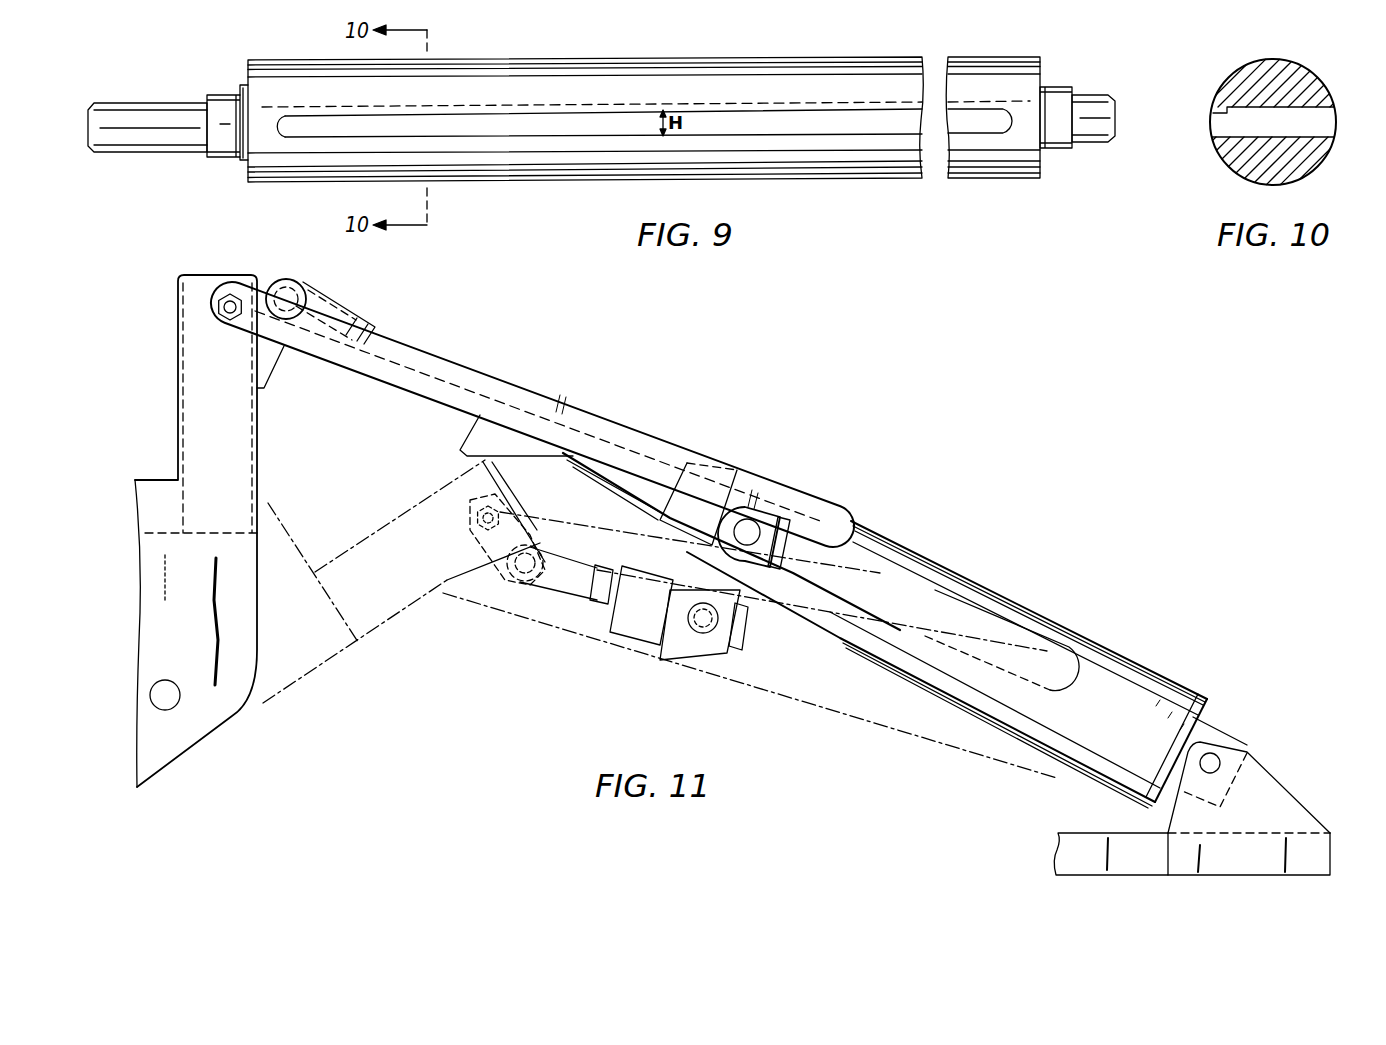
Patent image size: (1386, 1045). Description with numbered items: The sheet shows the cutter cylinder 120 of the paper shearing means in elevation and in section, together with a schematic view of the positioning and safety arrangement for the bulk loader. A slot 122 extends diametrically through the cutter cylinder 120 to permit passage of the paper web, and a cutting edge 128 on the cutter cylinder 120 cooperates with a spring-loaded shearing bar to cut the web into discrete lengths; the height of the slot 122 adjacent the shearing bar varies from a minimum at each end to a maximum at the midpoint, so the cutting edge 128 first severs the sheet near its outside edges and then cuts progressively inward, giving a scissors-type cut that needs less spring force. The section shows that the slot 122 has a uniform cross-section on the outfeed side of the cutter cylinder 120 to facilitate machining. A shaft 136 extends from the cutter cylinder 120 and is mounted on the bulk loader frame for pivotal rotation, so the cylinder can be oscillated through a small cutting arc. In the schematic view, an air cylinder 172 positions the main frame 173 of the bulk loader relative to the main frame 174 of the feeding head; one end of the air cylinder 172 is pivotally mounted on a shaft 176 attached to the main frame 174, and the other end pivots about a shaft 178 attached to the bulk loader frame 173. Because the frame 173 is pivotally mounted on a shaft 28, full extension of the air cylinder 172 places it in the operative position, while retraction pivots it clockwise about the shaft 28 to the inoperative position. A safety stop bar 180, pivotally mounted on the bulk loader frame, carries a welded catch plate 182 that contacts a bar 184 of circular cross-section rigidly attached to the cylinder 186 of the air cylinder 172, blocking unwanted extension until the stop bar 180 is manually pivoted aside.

In FIG. 11, the shaft 28 is at (178, 705).
In FIG. 9, the cutter cylinder 120 is at (806, 180).
In FIG. 10, the cutter cylinder 120 is at (1265, 60).
In FIG. 9, the slot 122 is at (797, 118).
In FIG. 10, the slot 122 is at (1340, 126).
In FIG. 9, the cutting edge 128 is at (597, 117).
In FIG. 10, the cutting edge 128 is at (1214, 106).
In FIG. 9, the shaft 136 is at (130, 153).
In FIG. 11, the air cylinder 172 is at (967, 657).
In FIG. 11, the main frame of the bulk loader 173 is at (190, 757).
In FIG. 11, the main frame of feeding head 174 is at (1092, 833).
In FIG. 11, the shaft 176 is at (1221, 764).
In FIG. 11, the shaft 178 is at (304, 286).
In FIG. 11, the safety stop bar 180 is at (616, 424).
In FIG. 11, the catch plate 182 is at (460, 446).
In FIG. 11, the bar 184 is at (660, 520).
In FIG. 11, the cylinder 186 is at (877, 532).